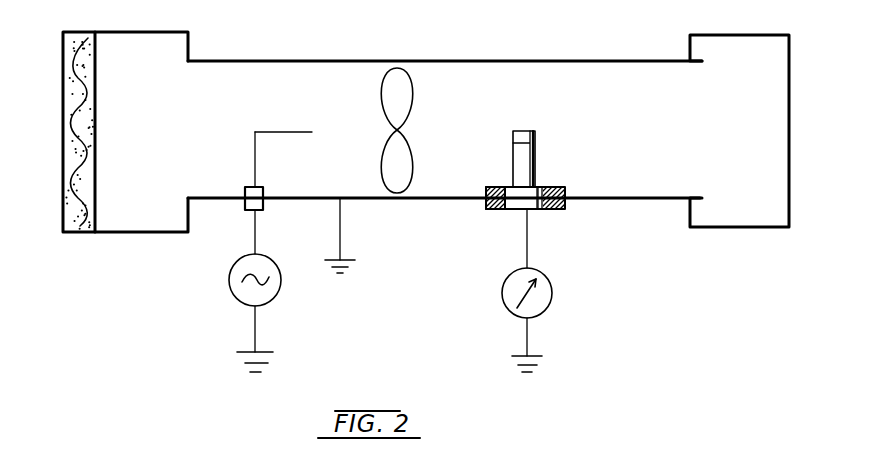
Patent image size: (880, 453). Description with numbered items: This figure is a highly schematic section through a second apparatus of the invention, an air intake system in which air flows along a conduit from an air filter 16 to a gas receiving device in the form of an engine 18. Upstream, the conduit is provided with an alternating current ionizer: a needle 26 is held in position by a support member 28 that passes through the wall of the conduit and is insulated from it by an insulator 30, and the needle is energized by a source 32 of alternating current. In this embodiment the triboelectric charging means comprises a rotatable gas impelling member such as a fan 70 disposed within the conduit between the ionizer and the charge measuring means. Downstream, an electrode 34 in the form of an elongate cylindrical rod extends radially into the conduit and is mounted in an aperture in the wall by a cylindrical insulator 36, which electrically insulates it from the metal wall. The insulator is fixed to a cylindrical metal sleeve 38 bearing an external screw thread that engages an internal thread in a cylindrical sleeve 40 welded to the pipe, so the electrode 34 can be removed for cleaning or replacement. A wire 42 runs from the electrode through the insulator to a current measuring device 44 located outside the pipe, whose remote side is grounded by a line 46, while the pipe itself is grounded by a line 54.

The air filter 16 is at (85, 233).
The engine 18 is at (735, 227).
The needle 26 is at (290, 132).
The support member 28 is at (255, 158).
The insulator 30 is at (263, 208).
The source of alternating current 32 is at (268, 298).
The electrode 34 is at (535, 141).
The cylindrical insulator 36 is at (532, 200).
The cylindrical metal sleeve 38 is at (550, 185).
The cylindrical sleeve 40 is at (567, 206).
The wire 42 is at (527, 237).
The current measuring device 44 is at (552, 293).
The line 46 is at (527, 337).
The line 54 is at (340, 238).
The fan 70 is at (398, 98).